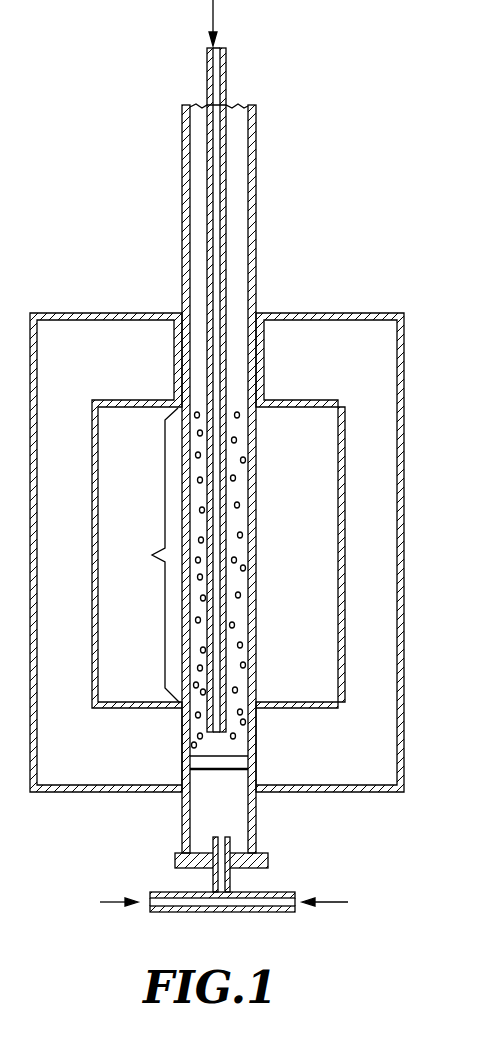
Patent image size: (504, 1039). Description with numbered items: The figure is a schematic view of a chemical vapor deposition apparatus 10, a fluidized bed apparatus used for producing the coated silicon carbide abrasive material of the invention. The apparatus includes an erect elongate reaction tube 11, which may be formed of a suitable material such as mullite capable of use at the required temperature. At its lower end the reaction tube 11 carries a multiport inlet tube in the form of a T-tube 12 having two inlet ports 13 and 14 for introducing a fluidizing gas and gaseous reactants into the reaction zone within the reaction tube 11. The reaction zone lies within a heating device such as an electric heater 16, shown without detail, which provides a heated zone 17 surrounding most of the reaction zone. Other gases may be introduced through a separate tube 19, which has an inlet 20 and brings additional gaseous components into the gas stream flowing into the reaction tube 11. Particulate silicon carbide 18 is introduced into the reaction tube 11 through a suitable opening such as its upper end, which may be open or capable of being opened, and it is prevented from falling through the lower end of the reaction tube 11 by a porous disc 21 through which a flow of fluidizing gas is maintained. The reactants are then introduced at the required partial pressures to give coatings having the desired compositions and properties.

The chemical vapor deposition apparatus 10 is at (407, 363).
The reaction tube 11 is at (256, 232).
The T-tube 12 is at (245, 913).
The inlet port 13 is at (295, 905).
The inlet port 14 is at (152, 905).
The electric heater 16 is at (378, 538).
The heated zone 17 is at (150, 555).
The particulate silicon carbide 18 is at (245, 566).
The tube 19 is at (226, 70).
The inlet 20 is at (217, 47).
The porous disc 21 is at (206, 772).